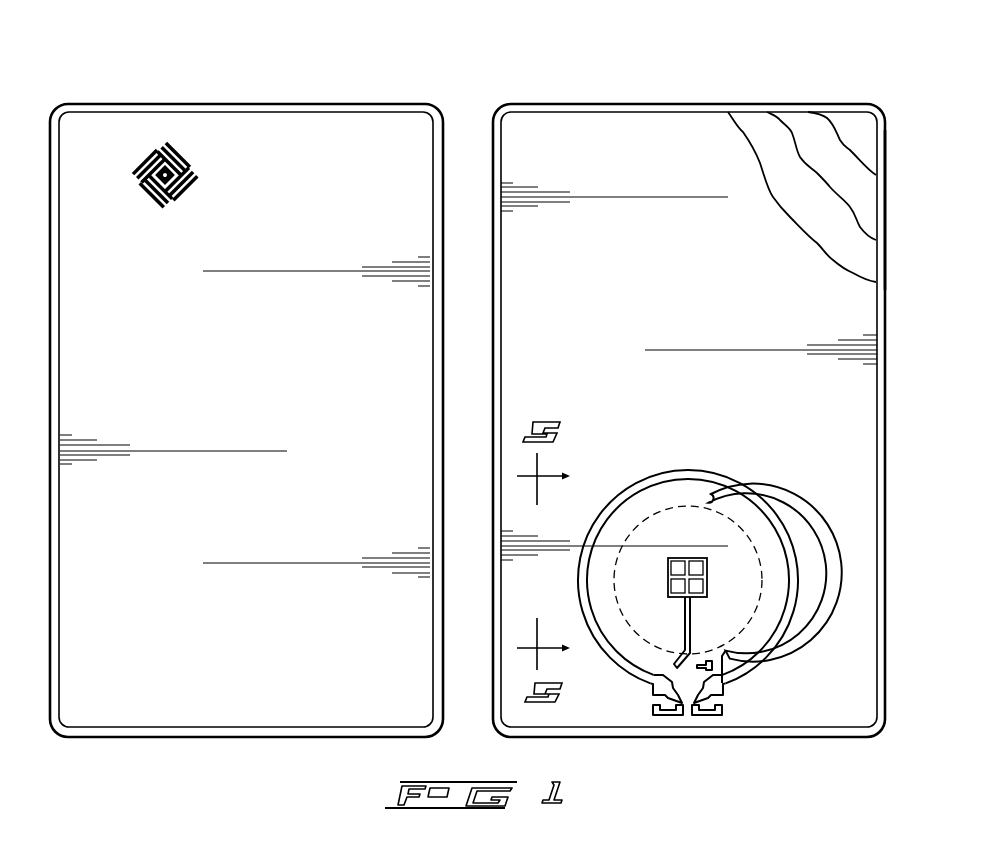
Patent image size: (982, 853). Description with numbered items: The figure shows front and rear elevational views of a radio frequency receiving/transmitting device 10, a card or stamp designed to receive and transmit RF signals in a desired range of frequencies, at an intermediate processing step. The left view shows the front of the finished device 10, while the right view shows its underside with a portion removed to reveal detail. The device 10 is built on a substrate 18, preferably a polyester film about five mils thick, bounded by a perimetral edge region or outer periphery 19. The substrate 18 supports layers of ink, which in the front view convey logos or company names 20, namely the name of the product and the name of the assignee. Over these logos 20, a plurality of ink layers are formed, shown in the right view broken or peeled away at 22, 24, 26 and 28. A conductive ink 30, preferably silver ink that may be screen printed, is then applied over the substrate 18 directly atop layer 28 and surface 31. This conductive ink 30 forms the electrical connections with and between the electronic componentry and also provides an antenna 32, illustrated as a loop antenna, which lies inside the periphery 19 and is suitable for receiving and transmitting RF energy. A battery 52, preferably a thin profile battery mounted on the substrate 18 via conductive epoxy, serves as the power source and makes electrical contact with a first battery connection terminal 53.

The radio frequency receiving/transmitting device 10 is at (100, 66).
The substrate 18 is at (258, 103).
The perimetral edge region 19 is at (314, 98).
The logos or company names 20 is at (172, 305).
The ink layer 22 is at (878, 143).
The ink layer 24 is at (840, 127).
The ink layer 26 is at (790, 127).
The ink layer 28 is at (746, 130).
The conductive ink 30 is at (725, 440).
The surface 31 is at (690, 312).
The antenna 32 is at (763, 500).
The battery 52 is at (657, 510).
The first battery connection terminal 53 is at (707, 585).